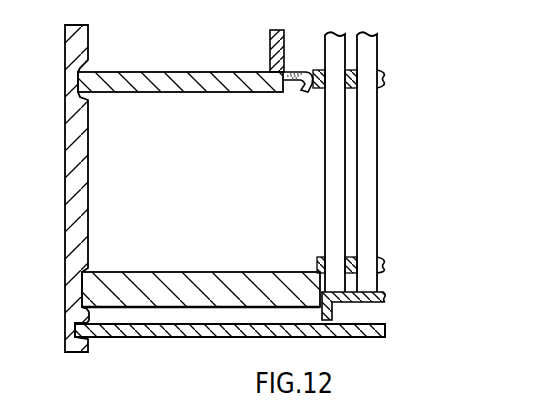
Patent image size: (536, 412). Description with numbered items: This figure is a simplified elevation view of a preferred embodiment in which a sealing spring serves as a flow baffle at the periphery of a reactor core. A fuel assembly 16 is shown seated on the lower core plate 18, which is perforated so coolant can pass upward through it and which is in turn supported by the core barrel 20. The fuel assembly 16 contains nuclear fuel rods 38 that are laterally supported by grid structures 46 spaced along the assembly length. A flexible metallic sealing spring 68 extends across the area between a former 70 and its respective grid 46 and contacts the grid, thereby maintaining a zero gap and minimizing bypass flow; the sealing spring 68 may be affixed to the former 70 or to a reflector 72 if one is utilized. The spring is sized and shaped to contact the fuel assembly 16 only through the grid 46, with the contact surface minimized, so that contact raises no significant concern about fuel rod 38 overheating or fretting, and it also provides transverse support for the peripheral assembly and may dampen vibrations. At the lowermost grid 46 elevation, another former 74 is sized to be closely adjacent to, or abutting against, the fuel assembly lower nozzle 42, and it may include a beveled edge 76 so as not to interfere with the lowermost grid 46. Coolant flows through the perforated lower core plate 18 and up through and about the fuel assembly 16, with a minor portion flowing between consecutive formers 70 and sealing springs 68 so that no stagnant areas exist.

The fuel assembly 16 is at (326, 157).
The lower core plate 18 is at (188, 337).
The core barrel 20 is at (90, 166).
The nuclear fuel rods 38 is at (375, 163).
The fuel assembly lower nozzle 42 is at (387, 300).
The grid structures 46 is at (318, 90).
The sealing spring 68 is at (306, 68).
The former 70 is at (160, 82).
The reflector 72 is at (278, 44).
The former 74 is at (161, 280).
The beveled edge 76 is at (318, 268).